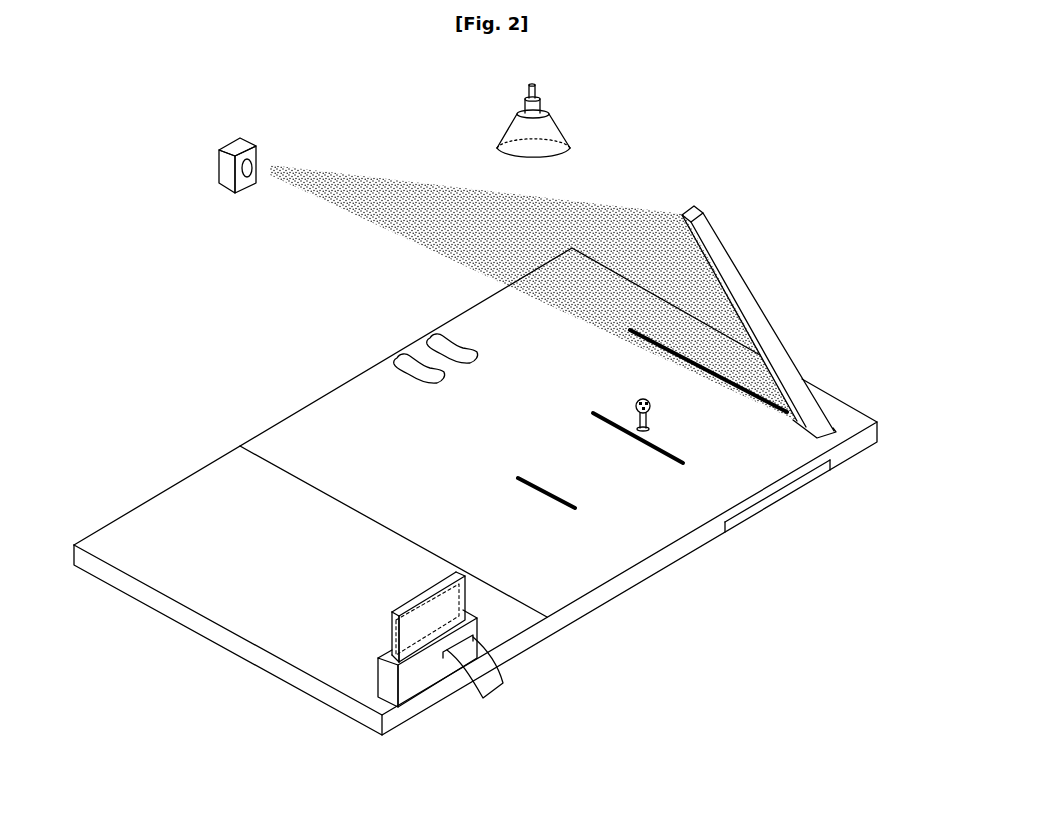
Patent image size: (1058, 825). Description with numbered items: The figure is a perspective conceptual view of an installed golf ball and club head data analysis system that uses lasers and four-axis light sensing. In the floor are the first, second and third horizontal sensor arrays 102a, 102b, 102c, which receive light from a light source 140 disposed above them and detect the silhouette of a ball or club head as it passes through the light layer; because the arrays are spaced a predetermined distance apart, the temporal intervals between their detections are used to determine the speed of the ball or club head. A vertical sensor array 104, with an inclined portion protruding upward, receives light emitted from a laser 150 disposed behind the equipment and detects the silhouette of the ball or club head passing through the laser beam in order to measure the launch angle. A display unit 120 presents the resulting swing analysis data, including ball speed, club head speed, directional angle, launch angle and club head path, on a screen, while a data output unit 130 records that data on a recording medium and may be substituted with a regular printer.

The first horizontal sensor array 102a is at (575, 508).
The second horizontal sensor array 102b is at (683, 463).
The third horizontal sensor array 102c is at (783, 417).
The vertical sensor array 104 is at (757, 307).
The display unit 120 is at (390, 618).
The data output unit 130 is at (487, 682).
The light source 140 is at (553, 133).
The laser 150 is at (219, 172).